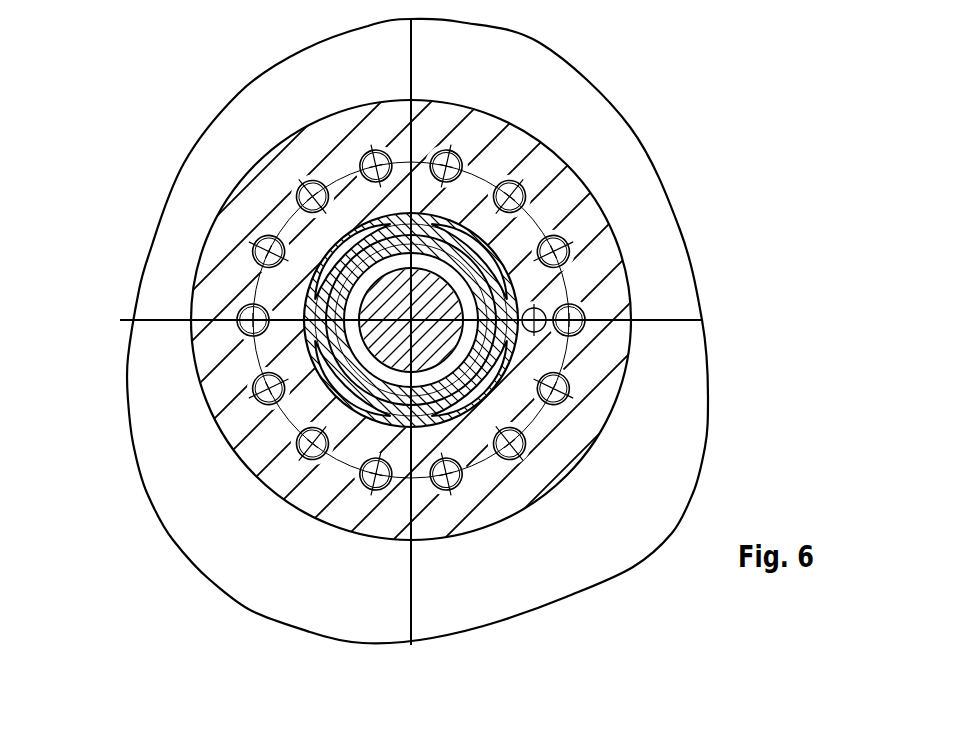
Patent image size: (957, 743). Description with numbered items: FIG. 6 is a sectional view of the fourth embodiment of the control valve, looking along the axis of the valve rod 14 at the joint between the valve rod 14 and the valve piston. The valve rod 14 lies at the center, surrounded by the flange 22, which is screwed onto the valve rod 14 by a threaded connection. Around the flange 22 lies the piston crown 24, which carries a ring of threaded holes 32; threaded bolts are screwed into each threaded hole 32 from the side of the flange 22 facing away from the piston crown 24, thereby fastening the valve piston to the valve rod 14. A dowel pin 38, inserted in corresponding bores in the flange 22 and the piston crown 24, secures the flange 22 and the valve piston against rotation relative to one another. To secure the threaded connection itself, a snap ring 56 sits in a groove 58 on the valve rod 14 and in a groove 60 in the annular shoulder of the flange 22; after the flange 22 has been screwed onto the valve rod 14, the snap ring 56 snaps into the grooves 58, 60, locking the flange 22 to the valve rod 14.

The valve rod 14 is at (373, 278).
The flange 22 is at (545, 430).
The piston crown 24 is at (665, 403).
The threaded hole 32 is at (513, 181).
The dowel pin 38 is at (538, 305).
The snap ring 56 is at (380, 393).
The groove 58 is at (336, 353).
The groove 60 is at (455, 402).